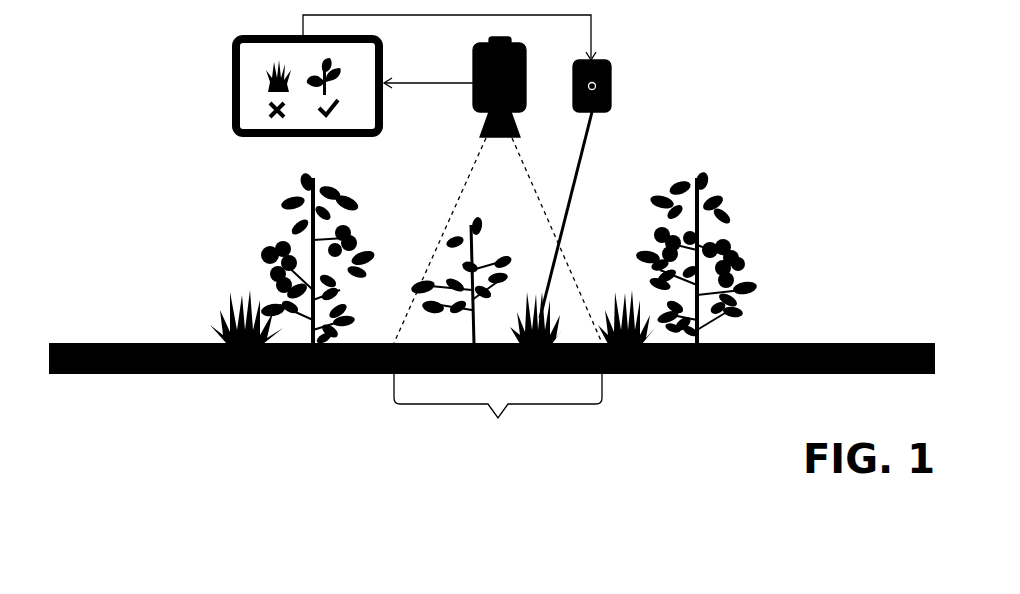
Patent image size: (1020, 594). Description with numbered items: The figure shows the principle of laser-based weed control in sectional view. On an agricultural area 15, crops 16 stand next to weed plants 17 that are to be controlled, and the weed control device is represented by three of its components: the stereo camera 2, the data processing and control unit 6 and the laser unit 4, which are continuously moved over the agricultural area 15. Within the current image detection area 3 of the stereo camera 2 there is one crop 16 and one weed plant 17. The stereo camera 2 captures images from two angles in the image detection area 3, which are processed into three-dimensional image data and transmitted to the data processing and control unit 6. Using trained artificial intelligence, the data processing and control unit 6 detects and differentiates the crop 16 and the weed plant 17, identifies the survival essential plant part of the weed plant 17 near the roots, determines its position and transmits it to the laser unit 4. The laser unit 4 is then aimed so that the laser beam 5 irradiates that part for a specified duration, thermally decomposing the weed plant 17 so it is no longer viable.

The stereo camera 2 is at (473, 62).
The image detection area 3 is at (540, 207).
The laser unit 4 is at (611, 65).
The laser beam 5 is at (543, 318).
The data processing and control unit 6 is at (232, 72).
The agricultural area 15 is at (176, 376).
The crop 16 is at (310, 242).
The weed plant 17 is at (226, 336).